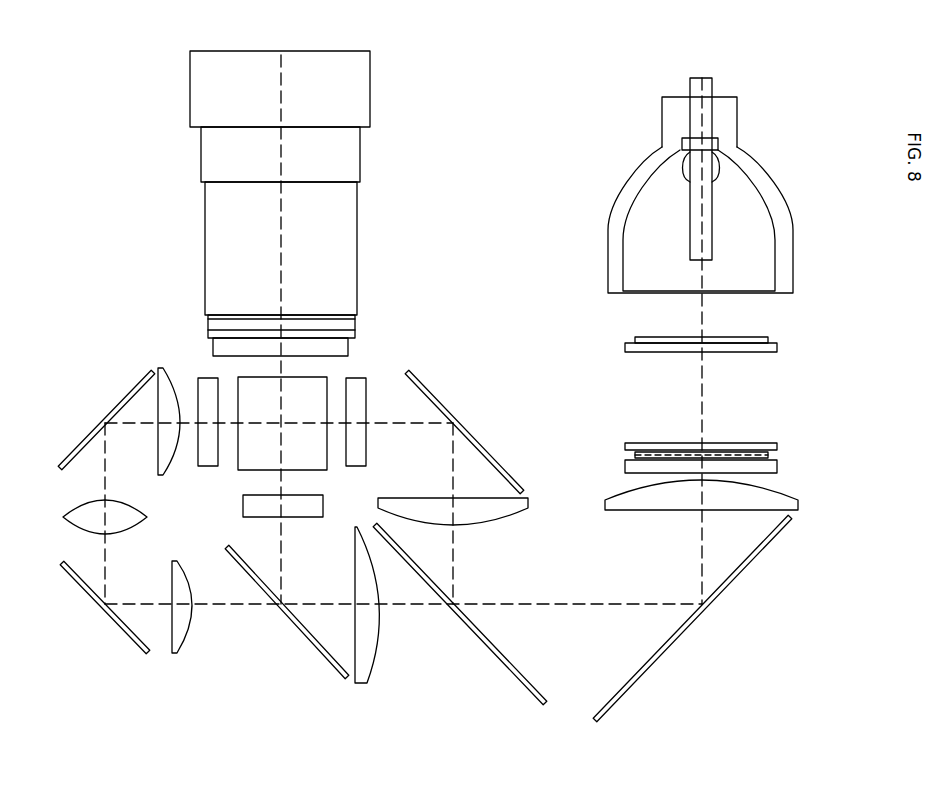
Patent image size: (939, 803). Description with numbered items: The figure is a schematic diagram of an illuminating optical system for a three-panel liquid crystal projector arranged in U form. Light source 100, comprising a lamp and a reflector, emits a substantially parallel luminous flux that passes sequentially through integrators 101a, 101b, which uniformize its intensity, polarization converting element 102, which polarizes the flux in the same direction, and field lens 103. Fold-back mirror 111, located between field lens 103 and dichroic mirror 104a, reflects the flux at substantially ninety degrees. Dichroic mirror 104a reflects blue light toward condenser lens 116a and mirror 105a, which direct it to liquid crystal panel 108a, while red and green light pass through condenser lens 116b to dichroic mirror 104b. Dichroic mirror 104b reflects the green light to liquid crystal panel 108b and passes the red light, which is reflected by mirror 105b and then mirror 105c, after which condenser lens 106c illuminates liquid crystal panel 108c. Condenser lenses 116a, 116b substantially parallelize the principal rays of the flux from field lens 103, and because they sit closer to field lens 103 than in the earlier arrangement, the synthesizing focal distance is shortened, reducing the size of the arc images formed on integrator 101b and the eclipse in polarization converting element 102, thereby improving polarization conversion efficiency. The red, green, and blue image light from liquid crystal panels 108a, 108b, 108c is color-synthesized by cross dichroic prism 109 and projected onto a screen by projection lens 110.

The light source 100 is at (765, 165).
The integrator 101a is at (778, 343).
The integrator 101b is at (777, 446).
The polarization converting element 102 is at (777, 467).
The field lens 103 is at (798, 503).
The dichroic mirror 104a is at (500, 665).
The dichroic mirror 104b is at (343, 677).
The mirror 105a is at (471, 393).
The mirror 105b is at (63, 517).
The mirror 105c is at (105, 418).
The condenser lens 106c is at (157, 367).
The liquid crystal panel 108a is at (364, 377).
The liquid crystal panel 108b is at (313, 517).
The liquid crystal panel 108c is at (198, 377).
The cross dichroic prism 109 is at (310, 470).
The projection lens 110 is at (357, 215).
The fold-back mirror 111 is at (705, 608).
The condenser lens 116a is at (477, 527).
The condenser lens 116b is at (372, 655).